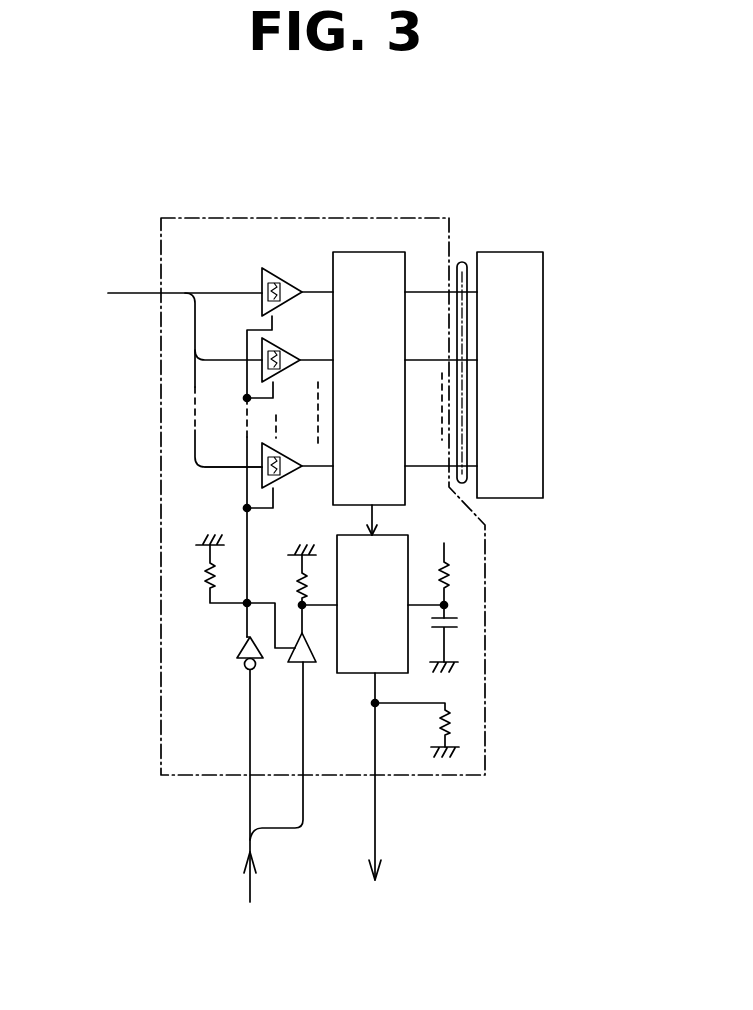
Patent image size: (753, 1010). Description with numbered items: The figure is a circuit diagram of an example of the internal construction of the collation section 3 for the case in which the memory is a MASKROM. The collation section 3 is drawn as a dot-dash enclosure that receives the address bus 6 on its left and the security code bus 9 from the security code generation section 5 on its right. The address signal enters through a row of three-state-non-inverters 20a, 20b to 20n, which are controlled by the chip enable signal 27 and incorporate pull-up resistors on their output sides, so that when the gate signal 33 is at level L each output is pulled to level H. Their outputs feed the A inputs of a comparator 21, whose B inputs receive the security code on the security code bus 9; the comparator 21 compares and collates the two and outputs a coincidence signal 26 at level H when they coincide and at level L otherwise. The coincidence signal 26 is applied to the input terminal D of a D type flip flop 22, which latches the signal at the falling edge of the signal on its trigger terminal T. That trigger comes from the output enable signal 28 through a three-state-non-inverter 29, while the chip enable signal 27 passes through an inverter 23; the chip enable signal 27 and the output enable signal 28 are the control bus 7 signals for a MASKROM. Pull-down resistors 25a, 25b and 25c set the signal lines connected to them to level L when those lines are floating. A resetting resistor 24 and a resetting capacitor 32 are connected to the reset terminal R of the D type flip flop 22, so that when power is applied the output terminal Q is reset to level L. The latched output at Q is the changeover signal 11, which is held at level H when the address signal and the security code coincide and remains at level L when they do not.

The collation section 3 is at (294, 218).
The security code generation section 5 is at (517, 251).
The address bus 6 is at (118, 292).
The control bus 7 is at (249, 856).
The security code bus 9 is at (460, 261).
The changeover signal 11 is at (377, 812).
The three-state-non-inverter 20a is at (257, 268).
The three-state-non-inverter 20b is at (260, 337).
The three-state-non-inverter 20n is at (262, 452).
The comparator 21 is at (368, 251).
The D type flip flop 22 is at (408, 673).
The inverter 23 is at (237, 658).
The resetting resistor 24 is at (448, 567).
The pull-down resistor 25a is at (453, 722).
The pull-down resistor 25b is at (300, 575).
The pull-down resistor 25c is at (207, 576).
The coincidence signal 26 is at (370, 515).
The chip enable signal 27 is at (248, 702).
The output enable signal 28 is at (302, 750).
The three-state-non-inverter 29 is at (316, 661).
The resetting capacitor 32 is at (458, 622).
The gate signal 33 is at (247, 489).